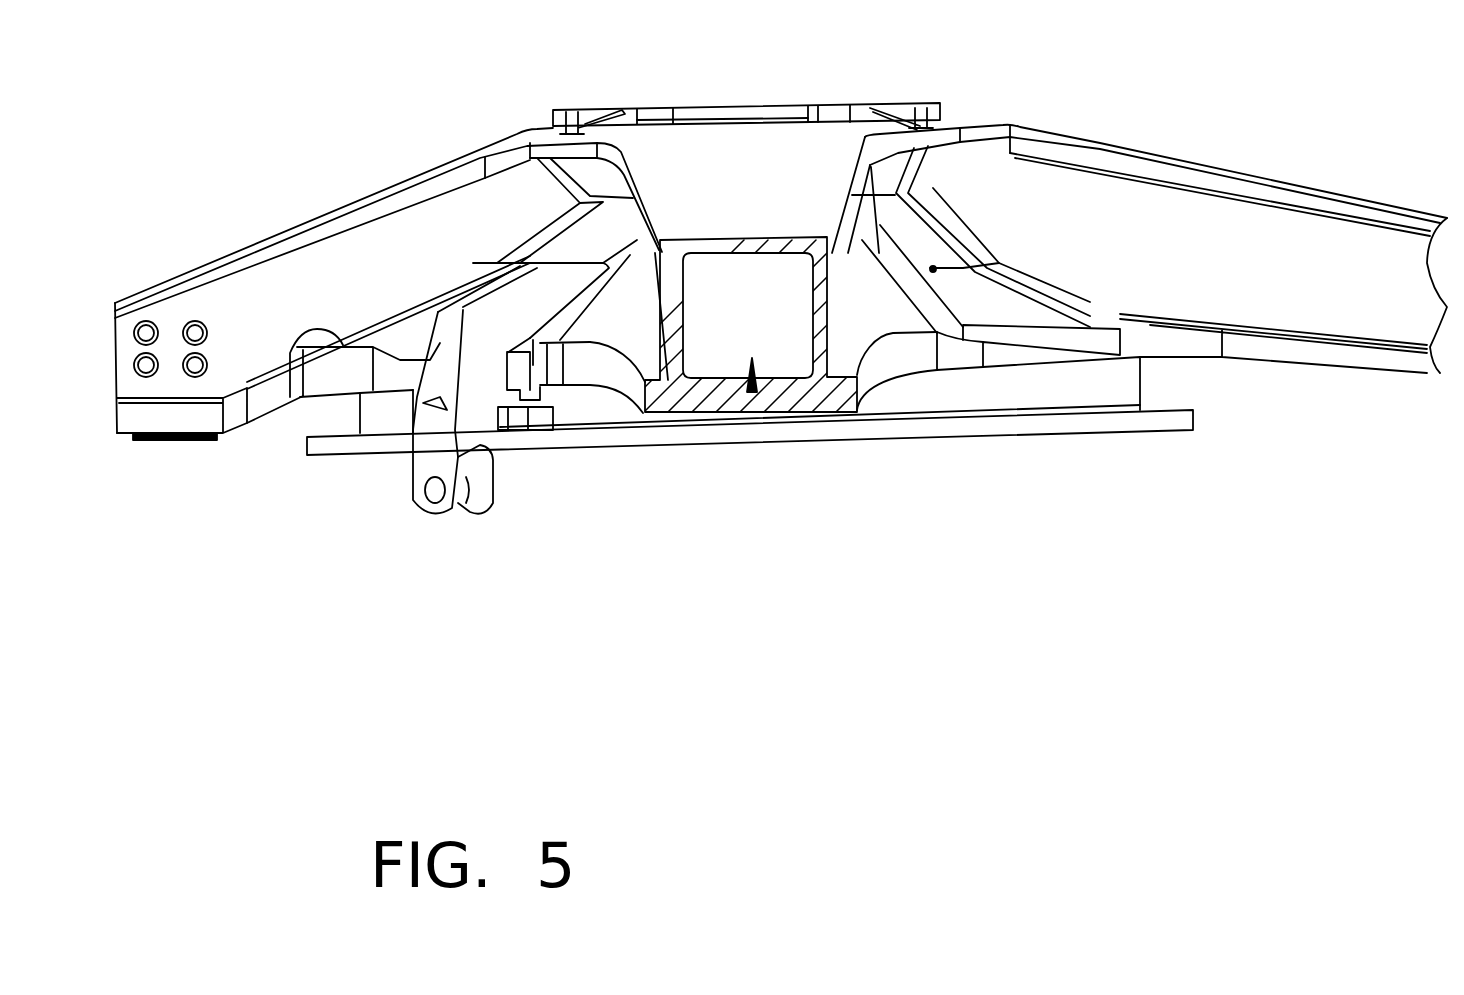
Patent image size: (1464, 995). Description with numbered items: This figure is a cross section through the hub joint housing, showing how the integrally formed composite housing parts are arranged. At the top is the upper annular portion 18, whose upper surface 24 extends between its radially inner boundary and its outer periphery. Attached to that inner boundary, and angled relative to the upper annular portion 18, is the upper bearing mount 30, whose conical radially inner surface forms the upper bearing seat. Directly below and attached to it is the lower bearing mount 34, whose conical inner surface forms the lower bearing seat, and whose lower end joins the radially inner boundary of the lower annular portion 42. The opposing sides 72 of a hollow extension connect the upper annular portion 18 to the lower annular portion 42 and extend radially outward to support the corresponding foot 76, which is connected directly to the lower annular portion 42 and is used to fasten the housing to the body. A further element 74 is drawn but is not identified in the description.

The upper annular portion 18 is at (363, 185).
The upper surface 24 is at (752, 173).
The upper bearing mount 30 is at (950, 168).
The lower bearing mount 34 is at (953, 212).
The lower annular portion 42 is at (297, 390).
The opposing sides 72 is at (365, 278).
The direction arrow 74 is at (752, 393).
The foot 76 is at (158, 440).